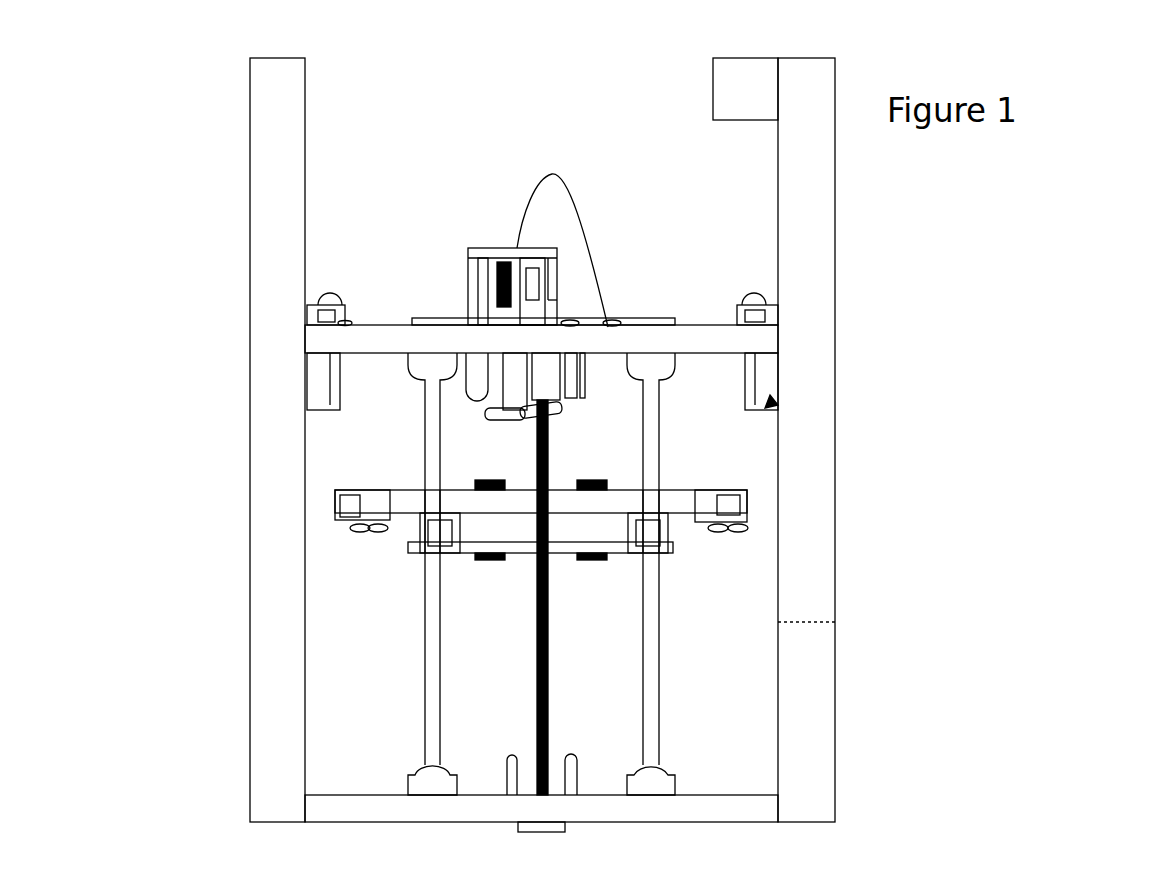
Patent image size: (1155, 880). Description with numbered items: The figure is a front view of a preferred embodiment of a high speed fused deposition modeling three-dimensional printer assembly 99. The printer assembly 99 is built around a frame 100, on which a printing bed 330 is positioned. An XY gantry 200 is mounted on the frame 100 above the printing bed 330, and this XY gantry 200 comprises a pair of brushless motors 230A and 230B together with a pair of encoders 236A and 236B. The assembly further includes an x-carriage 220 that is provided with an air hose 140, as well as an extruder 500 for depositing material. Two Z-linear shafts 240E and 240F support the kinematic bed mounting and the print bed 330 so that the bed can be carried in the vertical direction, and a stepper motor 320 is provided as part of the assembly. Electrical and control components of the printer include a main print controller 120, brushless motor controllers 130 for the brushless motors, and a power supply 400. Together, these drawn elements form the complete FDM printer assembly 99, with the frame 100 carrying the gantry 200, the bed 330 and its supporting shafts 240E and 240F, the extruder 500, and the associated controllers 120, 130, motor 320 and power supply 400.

The FDM 3D printer assembly 99 is at (990, 188).
The frame 100 is at (633, 416).
The main print controller 120 is at (183, 440).
The brushless motor controllers 130 is at (443, 440).
The air hose 140 is at (505, 190).
The XY gantry 200 is at (687, 306).
The x-carriage 220 is at (537, 243).
The brushless motor 230A is at (199, 367).
The brushless motor 230B is at (895, 342).
The encoder 236A is at (207, 442).
The encoder 236B is at (889, 402).
The Z-linear shaft 240E is at (261, 587).
The Z-linear shaft 240F is at (834, 586).
The stepper motor 320 is at (543, 833).
The printing bed 330 is at (645, 490).
The power supply 400 is at (835, 698).
The extruder 500 is at (708, 96).